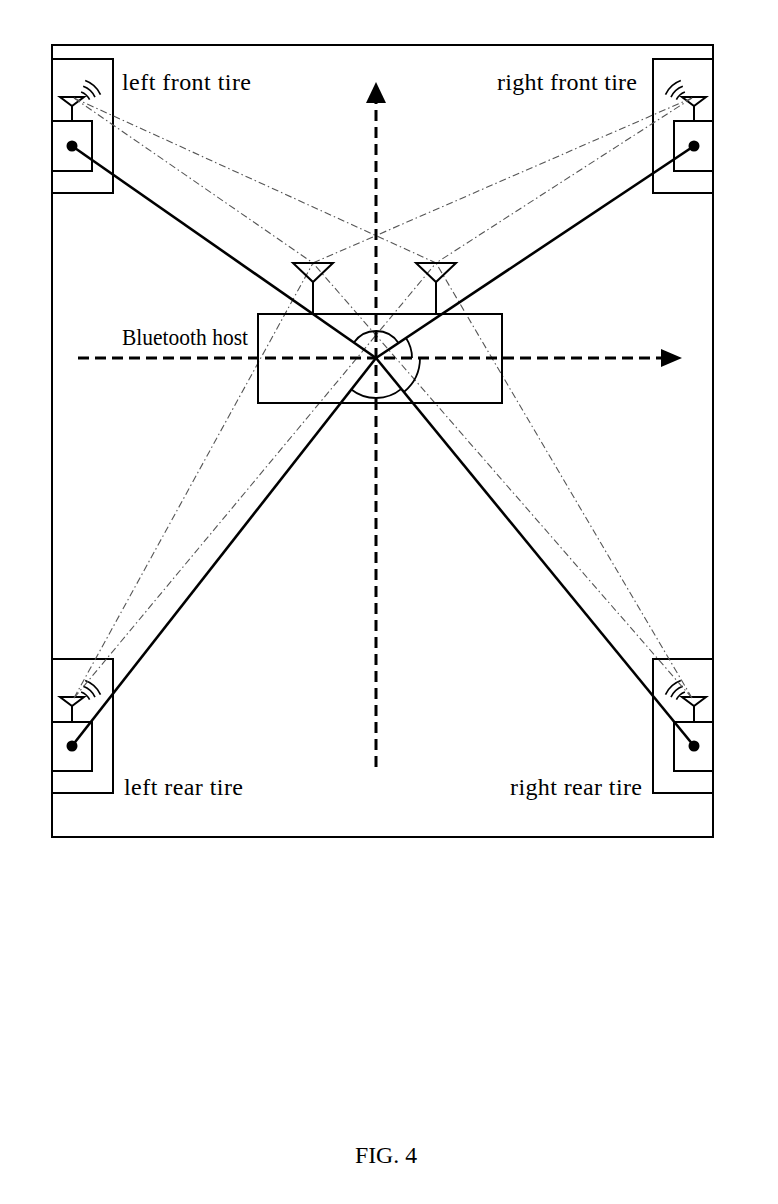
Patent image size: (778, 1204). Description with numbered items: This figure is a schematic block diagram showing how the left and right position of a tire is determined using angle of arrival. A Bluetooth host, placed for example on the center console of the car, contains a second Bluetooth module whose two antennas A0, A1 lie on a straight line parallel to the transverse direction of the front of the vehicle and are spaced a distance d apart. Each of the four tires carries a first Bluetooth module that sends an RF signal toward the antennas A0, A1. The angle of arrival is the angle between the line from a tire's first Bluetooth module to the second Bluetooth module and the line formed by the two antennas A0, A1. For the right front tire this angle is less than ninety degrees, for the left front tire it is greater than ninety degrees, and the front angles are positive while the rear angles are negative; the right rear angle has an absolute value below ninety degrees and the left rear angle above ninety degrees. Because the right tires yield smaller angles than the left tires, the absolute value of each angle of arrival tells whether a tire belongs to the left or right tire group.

The antenna A0 is at (299, 280).
The antenna A1 is at (451, 280).